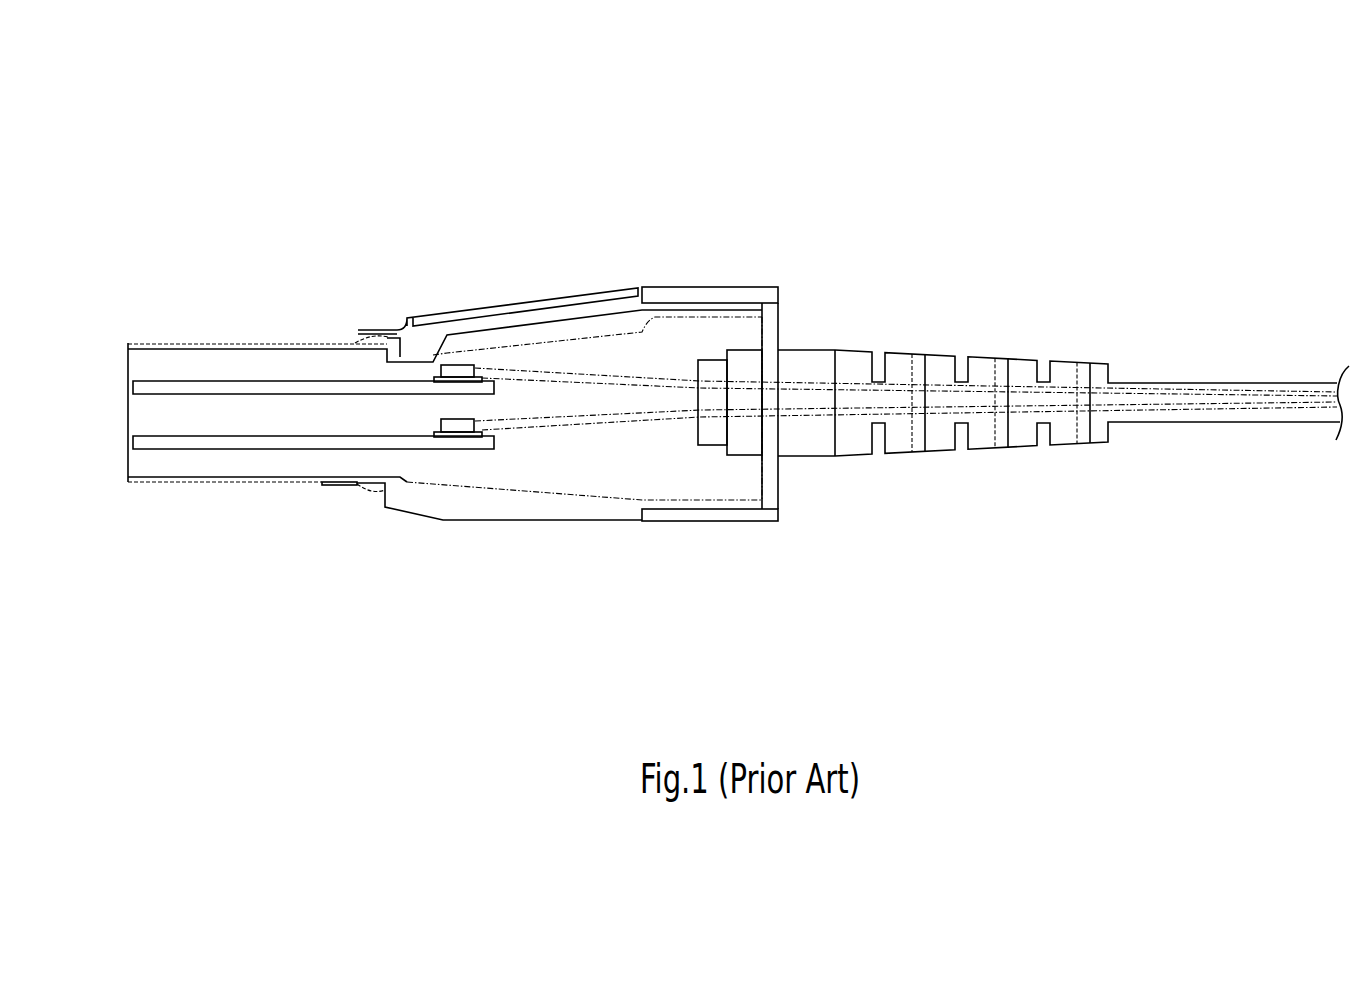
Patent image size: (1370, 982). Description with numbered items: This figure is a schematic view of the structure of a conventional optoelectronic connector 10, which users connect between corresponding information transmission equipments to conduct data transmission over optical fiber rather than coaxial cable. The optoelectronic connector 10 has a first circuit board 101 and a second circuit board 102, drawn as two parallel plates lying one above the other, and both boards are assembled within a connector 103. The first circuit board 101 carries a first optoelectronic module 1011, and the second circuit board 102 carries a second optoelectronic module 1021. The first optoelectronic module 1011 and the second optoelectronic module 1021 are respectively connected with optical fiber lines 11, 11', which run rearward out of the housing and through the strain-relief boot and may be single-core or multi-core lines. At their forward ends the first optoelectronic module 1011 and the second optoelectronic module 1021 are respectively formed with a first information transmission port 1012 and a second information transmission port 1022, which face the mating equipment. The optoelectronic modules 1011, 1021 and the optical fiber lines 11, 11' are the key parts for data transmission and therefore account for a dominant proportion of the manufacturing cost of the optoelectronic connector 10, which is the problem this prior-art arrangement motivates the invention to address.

The optoelectronic connector 10 is at (717, 372).
The optical fiber line 11 is at (453, 355).
The optical fiber line 11' is at (584, 460).
The first circuit board 101 is at (258, 388).
The first optoelectronic module 1011 is at (455, 370).
The first information transmission port 1012 is at (158, 380).
The second circuit board 102 is at (232, 440).
The second optoelectronic module 1021 is at (457, 425).
The second information transmission port 1022 is at (160, 437).
The connector 103 is at (357, 483).